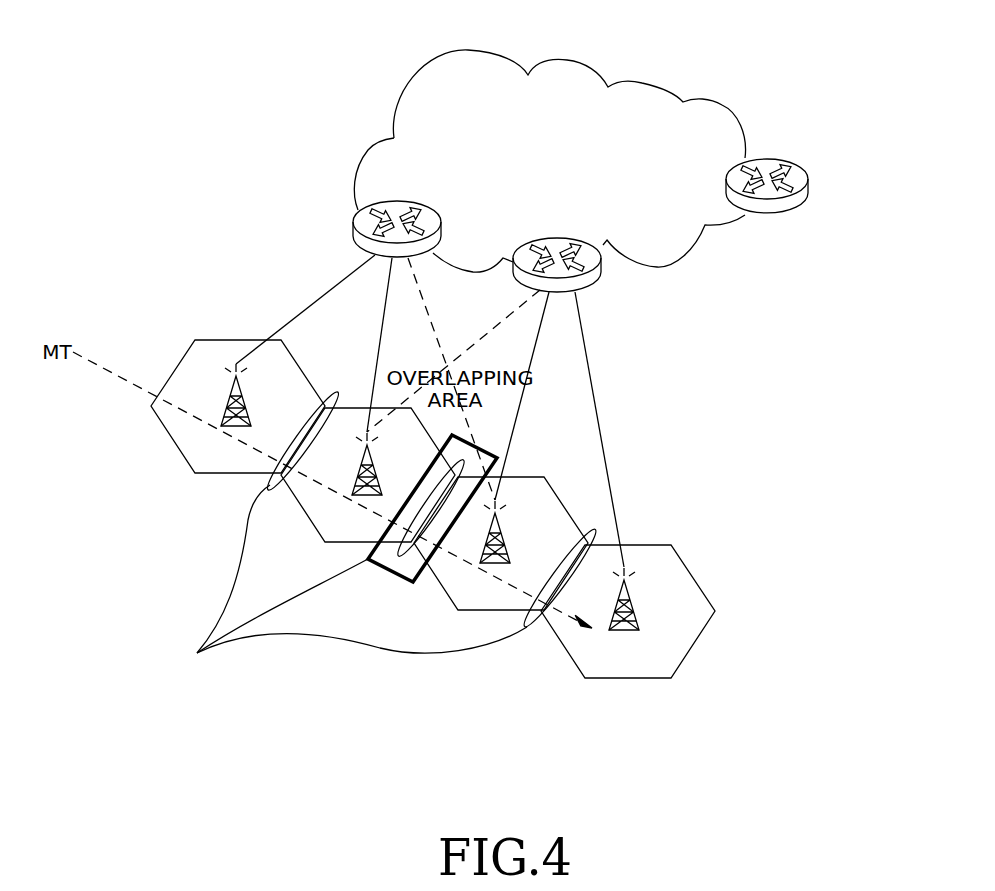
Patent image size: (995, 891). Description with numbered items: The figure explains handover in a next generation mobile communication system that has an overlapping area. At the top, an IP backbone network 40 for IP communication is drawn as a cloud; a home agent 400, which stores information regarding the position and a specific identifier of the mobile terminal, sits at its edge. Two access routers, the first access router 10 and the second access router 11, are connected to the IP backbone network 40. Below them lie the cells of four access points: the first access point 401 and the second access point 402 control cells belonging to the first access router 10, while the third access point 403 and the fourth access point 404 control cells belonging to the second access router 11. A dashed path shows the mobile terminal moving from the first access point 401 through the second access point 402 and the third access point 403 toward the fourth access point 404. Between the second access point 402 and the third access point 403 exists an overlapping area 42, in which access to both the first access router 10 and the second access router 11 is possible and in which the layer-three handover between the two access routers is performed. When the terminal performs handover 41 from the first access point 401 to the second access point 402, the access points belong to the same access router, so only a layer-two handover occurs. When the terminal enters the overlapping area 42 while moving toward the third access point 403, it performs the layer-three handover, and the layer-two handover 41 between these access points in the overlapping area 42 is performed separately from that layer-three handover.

The IP backbone network 40 is at (569, 58).
The AR 1 10 is at (401, 199).
The AR 2 11 is at (562, 236).
The home agent 400 is at (809, 184).
The AP 1 401 is at (158, 444).
The AP 2 402 is at (305, 522).
The AP 3 403 is at (446, 594).
The AP 4 404 is at (556, 644).
The handover 41 is at (197, 653).
The overlapping area 42 is at (400, 582).